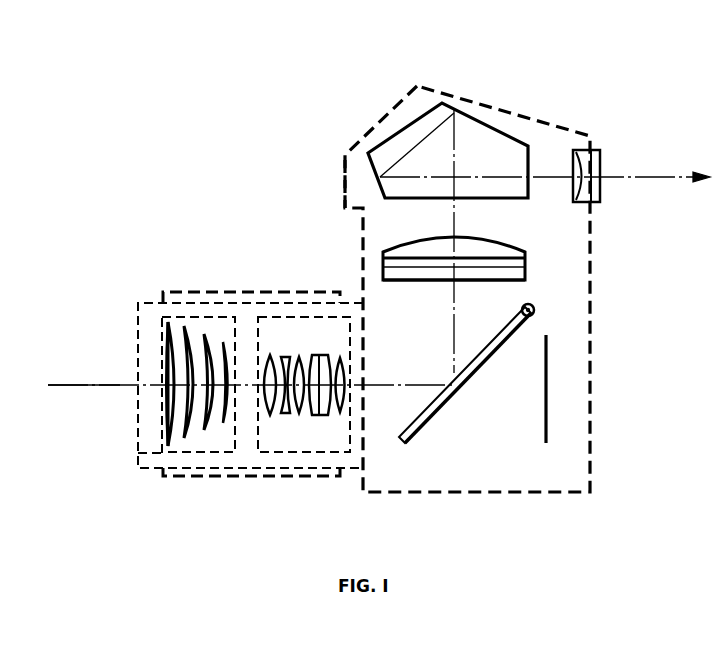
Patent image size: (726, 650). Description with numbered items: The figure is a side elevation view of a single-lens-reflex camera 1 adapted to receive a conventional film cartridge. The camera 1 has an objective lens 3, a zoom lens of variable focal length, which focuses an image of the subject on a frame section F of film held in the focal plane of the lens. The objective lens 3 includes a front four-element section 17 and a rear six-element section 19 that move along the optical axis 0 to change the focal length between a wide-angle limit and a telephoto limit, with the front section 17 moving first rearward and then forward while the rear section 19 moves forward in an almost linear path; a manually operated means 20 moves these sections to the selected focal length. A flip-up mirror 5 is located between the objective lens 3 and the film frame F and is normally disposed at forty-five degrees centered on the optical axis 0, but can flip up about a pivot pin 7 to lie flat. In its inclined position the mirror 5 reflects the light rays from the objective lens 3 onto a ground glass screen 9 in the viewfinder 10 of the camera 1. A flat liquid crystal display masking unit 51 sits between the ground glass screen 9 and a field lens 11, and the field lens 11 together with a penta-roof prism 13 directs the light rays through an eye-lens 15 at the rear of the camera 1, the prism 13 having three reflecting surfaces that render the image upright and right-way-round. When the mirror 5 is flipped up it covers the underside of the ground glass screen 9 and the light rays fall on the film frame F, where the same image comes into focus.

The camera 1 is at (588, 433).
The viewfinder 10 is at (360, 179).
The penta-roof prism 13 is at (442, 100).
The eye-lens 15 is at (600, 160).
The field lens 11 is at (490, 250).
The LCD masking unit 51 is at (526, 266).
The ground glass screen 9 is at (512, 283).
The flip-up mirror 5 is at (437, 414).
The pivot pin 7 is at (522, 310).
The frame section of film F is at (546, 425).
The objective lens 3 is at (137, 438).
The manually operated means 20 is at (195, 478).
The front four-element section 17 is at (212, 327).
The rear six-element section 19 is at (303, 330).
The optical axis 0 is at (70, 383).